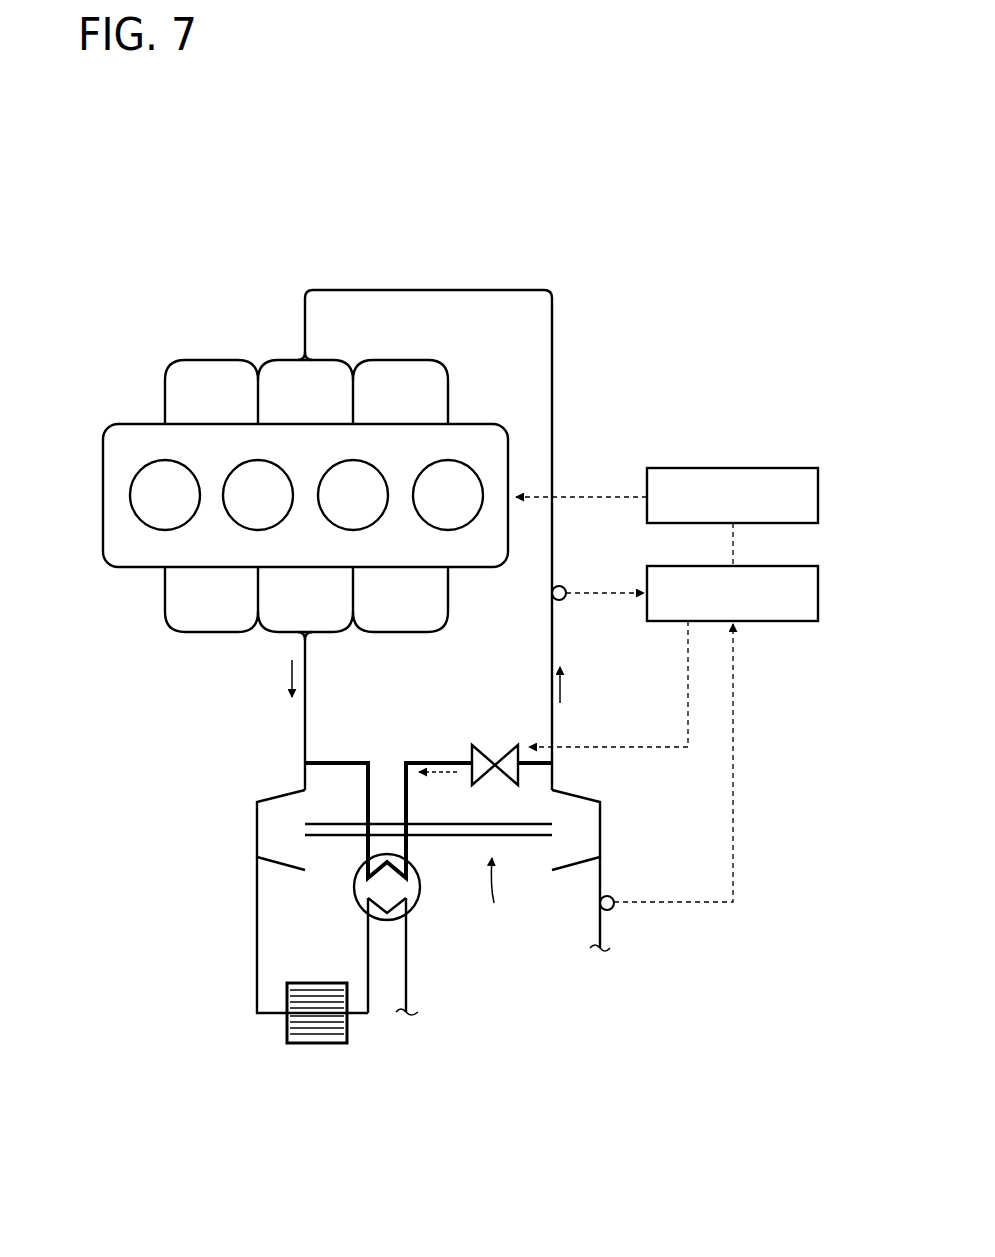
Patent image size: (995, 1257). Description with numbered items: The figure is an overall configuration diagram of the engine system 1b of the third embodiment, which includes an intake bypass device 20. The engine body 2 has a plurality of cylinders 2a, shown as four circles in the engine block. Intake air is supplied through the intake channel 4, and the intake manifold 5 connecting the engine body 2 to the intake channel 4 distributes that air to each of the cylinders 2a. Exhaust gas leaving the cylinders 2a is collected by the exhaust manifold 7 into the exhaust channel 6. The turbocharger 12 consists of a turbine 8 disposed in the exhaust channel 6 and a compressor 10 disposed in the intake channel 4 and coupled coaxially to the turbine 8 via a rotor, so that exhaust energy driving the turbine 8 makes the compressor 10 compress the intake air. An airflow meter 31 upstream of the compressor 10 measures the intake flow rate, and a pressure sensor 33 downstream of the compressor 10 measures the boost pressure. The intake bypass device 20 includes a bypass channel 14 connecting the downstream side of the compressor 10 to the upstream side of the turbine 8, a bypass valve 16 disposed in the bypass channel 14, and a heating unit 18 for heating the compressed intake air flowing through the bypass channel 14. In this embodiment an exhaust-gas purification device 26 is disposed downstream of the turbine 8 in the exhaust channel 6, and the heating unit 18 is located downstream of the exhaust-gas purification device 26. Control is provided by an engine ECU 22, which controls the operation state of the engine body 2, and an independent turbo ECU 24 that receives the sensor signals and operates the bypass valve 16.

The engine system 1b is at (112, 225).
The engine body 2 is at (91, 437).
The cylinders 2a is at (131, 511).
The intake channel 4 is at (466, 289).
The intake manifold 5 is at (213, 360).
The exhaust channel 6 is at (305, 727).
The exhaust manifold 7 is at (163, 592).
The turbine 8 is at (283, 850).
The compressor 10 is at (573, 850).
The turbocharger 12 is at (495, 895).
The bypass channel 14 is at (440, 763).
The bypass valve 16 is at (484, 747).
The heating unit 18 is at (418, 902).
The intake bypass device 20 is at (428, 812).
The engine ECU 22 is at (797, 468).
The turbo ECU 24 is at (797, 566).
The exhaust-gas purification device 26 is at (317, 1043).
The airflow meter 31 is at (612, 896).
The pressure sensor 33 is at (565, 587).